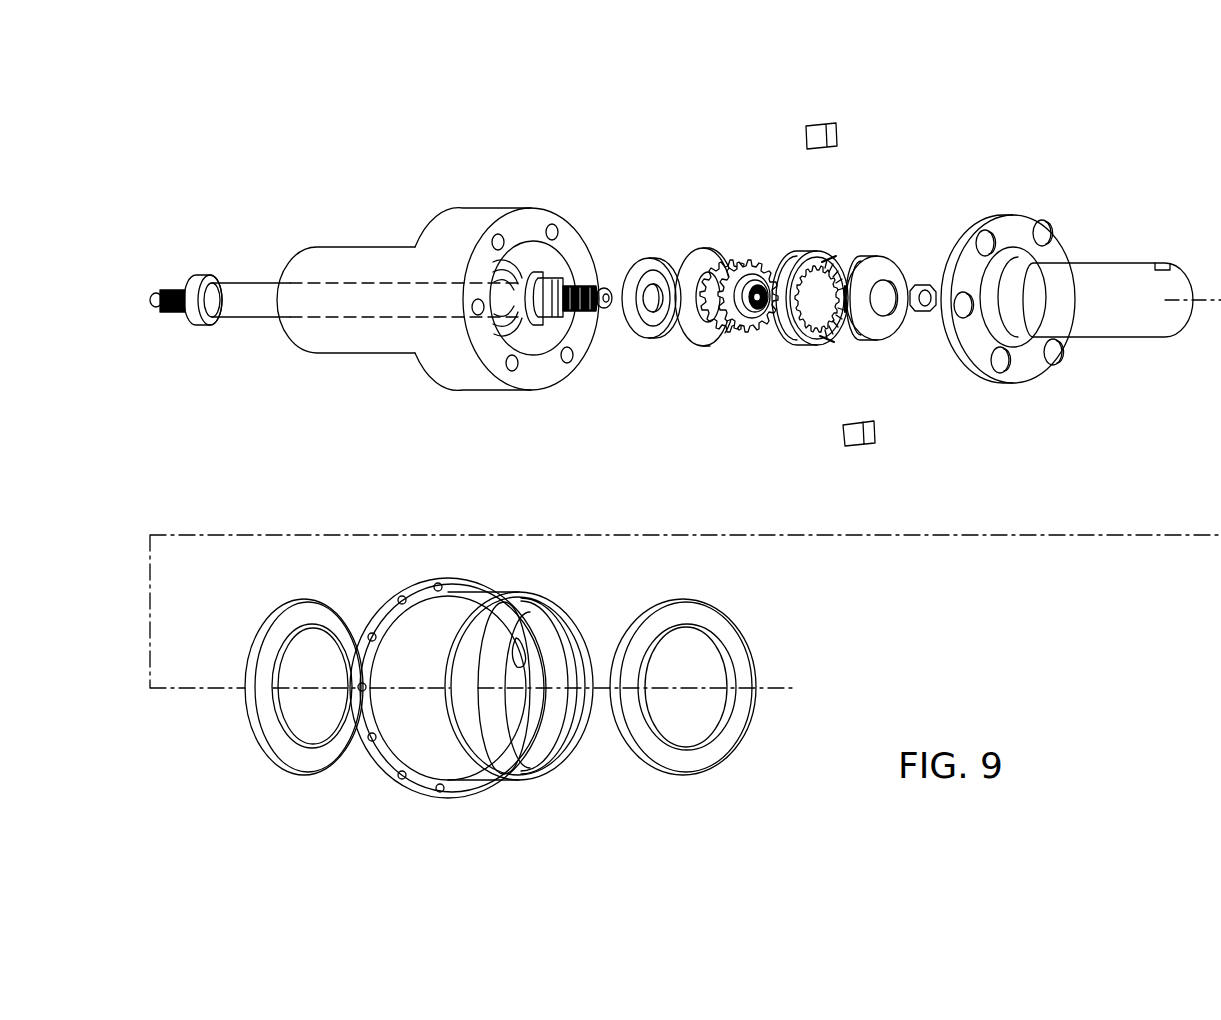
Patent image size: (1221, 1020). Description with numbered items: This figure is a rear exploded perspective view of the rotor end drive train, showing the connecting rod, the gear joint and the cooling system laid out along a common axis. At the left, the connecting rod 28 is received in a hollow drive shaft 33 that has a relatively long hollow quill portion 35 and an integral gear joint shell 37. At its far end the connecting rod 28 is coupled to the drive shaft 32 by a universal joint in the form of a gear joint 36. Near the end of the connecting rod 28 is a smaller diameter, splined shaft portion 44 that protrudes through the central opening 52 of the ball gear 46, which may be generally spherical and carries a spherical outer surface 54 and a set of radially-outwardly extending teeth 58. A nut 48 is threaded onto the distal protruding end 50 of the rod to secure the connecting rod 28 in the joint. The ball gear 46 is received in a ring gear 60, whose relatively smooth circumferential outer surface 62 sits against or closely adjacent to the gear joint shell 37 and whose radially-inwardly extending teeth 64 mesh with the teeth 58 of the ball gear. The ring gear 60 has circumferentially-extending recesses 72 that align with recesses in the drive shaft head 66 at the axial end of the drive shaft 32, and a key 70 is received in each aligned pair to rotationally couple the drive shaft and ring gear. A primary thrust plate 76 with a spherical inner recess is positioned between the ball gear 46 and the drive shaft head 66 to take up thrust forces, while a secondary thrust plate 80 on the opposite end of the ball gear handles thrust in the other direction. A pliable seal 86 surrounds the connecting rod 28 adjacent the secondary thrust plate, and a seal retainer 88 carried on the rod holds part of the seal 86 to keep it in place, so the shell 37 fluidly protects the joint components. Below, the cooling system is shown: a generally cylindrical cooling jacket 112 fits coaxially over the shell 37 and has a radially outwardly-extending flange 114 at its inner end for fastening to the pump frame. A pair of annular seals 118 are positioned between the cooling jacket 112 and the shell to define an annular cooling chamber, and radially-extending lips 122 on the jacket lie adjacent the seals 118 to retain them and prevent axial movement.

The connecting rod 28 is at (505, 315).
The drive shaft 32 is at (1115, 268).
The hollow drive shaft 33 is at (330, 247).
The hollow quill portion 35 is at (386, 247).
The gear joint 36 is at (748, 428).
The gear joint shell 37 is at (492, 210).
The shaft portion 44 is at (172, 290).
The ball gear 46 is at (753, 253).
The nut 48 is at (926, 318).
The distal/protruding end 50 is at (155, 300).
The central opening 52 is at (752, 302).
The spherical outer surface 54 is at (756, 333).
The radially-outwardly extending teeth 58 is at (745, 333).
The ring gear 60 is at (838, 244).
The circumferential outer surface 62 is at (790, 342).
The radially-inwardly extending teeth 64 is at (808, 262).
The drive shaft head 66 is at (1020, 215).
The key 70 is at (849, 133).
The circumferentially-extending recess 72 is at (818, 244).
The primary thrust plate 76 is at (912, 246).
The secondary thrust plate 80 is at (713, 242).
The pliable seal 86 is at (668, 262).
The seal retainer 88 is at (196, 278).
The cooling jacket 112 is at (455, 770).
The flange 114 is at (386, 765).
The annular seal 118 is at (318, 607).
The radially-extending lip 122 is at (518, 648).